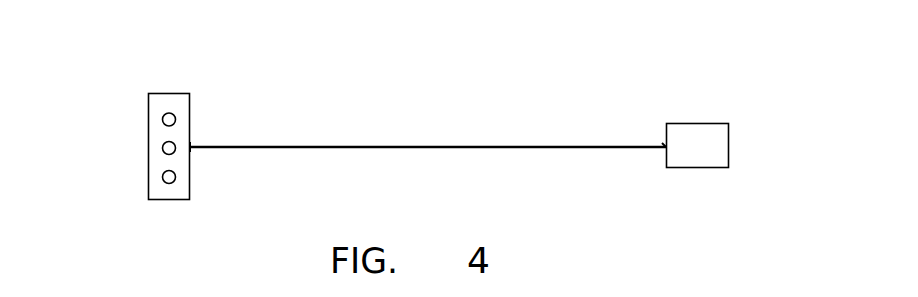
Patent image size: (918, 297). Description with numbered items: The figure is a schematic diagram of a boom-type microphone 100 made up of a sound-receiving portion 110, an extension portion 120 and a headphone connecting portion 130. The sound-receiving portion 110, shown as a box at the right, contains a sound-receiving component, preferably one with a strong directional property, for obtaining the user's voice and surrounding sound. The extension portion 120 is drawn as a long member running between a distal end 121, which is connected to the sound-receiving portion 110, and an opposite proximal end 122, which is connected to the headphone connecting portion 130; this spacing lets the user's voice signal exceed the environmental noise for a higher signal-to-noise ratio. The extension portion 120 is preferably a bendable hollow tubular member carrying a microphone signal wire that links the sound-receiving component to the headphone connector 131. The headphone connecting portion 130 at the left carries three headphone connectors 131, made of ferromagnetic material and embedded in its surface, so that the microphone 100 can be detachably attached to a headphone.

The microphone 100 is at (350, 81).
The sound-receiving portion 110 is at (692, 130).
The extension portion 120 is at (423, 146).
The distal end 121 is at (662, 143).
The proximal end 122 is at (190, 146).
The headphone connecting portion 130 is at (162, 93).
The headphone connector 131 is at (163, 119).